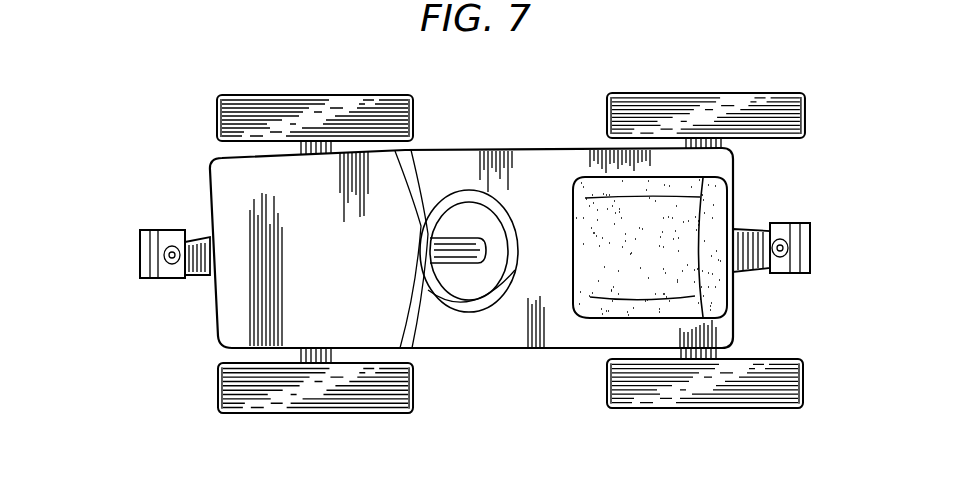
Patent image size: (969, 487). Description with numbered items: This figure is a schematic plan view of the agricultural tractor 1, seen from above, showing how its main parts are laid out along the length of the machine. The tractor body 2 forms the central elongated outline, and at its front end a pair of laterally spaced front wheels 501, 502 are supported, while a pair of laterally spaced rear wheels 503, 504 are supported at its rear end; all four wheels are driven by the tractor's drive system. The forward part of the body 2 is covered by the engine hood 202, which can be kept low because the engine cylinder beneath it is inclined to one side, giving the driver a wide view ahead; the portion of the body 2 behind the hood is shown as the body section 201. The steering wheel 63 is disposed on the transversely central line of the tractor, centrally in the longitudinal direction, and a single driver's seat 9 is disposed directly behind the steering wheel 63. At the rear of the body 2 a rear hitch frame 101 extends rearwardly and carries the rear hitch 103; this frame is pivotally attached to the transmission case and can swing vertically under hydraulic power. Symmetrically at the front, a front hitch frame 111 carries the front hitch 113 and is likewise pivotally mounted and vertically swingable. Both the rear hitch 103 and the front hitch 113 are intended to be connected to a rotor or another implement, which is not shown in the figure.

The tractor 1 is at (533, 108).
The body 2 is at (455, 170).
The driver's seat 9 is at (573, 266).
The steering wheel 63 is at (510, 232).
The rear hitch frame 101 is at (756, 227).
The rear hitch 103 is at (800, 276).
The front hitch frame 111 is at (200, 275).
The front hitch 113 is at (152, 231).
The rear body portion 201 is at (488, 338).
The engine hood 202 is at (230, 327).
The front wheel 501 is at (345, 396).
The front wheel 502 is at (347, 104).
The rear wheel 503 is at (708, 384).
The rear wheel 504 is at (710, 105).